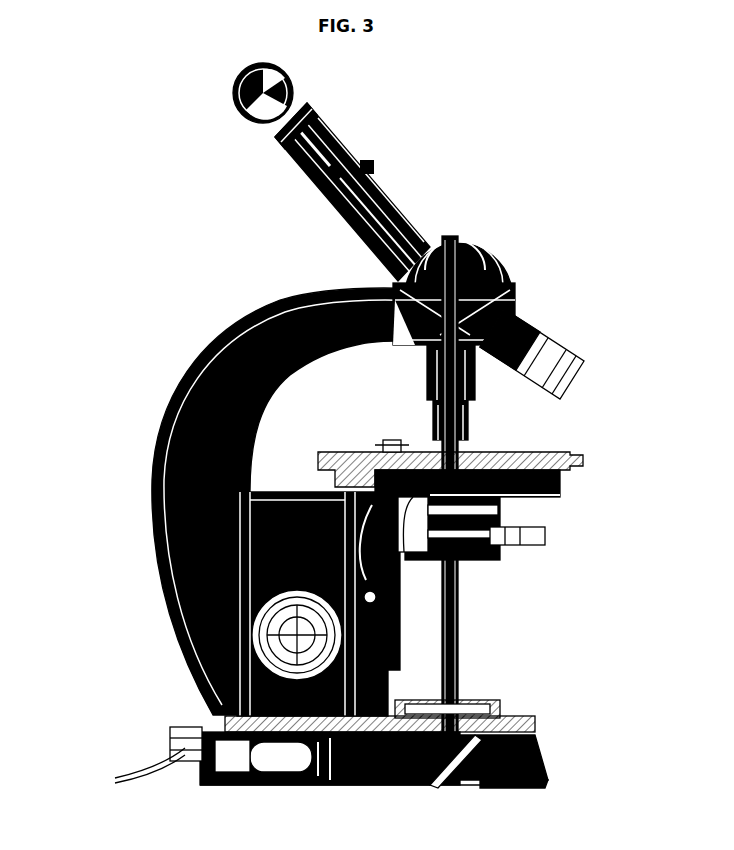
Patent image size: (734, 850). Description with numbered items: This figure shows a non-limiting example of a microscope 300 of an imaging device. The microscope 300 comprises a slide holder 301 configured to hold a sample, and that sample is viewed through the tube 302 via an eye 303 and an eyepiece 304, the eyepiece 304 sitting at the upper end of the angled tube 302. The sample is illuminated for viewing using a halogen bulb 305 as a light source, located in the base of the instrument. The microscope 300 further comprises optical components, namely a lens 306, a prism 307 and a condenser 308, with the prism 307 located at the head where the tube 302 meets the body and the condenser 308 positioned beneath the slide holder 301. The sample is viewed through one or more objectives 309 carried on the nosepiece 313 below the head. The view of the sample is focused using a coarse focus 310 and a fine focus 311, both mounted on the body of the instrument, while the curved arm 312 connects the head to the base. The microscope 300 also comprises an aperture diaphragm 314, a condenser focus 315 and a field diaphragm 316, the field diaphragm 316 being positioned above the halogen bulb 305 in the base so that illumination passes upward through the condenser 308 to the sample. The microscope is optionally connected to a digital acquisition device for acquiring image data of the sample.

The microscope 300 is at (347, 425).
The slide holder 301 is at (583, 463).
The tube 302 is at (332, 205).
The eye 303 is at (236, 88).
The eyepiece 304 is at (290, 141).
The halogen bulb 305 is at (270, 756).
The lens 306 is at (368, 168).
The prism 307 is at (410, 270).
The condenser 308 is at (503, 517).
The objectives 309 is at (557, 343).
The coarse focus 310 is at (292, 593).
The fine focus 311 is at (300, 632).
The arm 312 is at (305, 333).
The nosepiece 313 is at (512, 298).
The aperture diaphragm 314 is at (545, 538).
The condenser focus 315 is at (400, 600).
The field diaphragm 316 is at (500, 705).